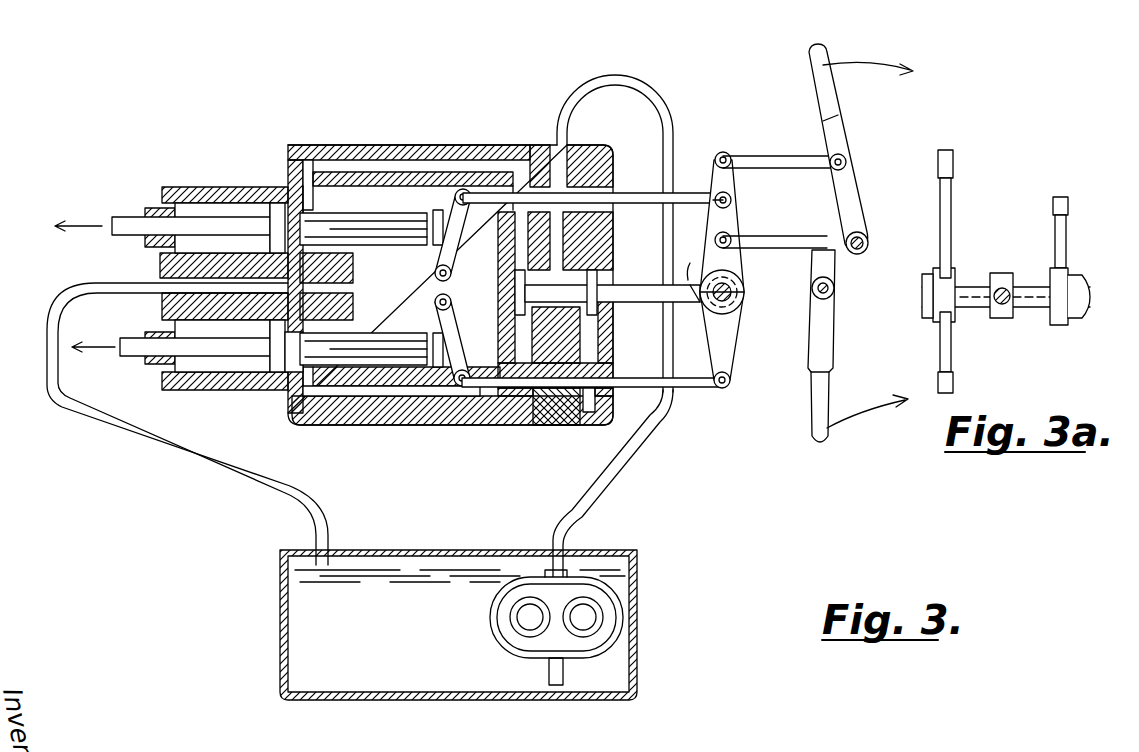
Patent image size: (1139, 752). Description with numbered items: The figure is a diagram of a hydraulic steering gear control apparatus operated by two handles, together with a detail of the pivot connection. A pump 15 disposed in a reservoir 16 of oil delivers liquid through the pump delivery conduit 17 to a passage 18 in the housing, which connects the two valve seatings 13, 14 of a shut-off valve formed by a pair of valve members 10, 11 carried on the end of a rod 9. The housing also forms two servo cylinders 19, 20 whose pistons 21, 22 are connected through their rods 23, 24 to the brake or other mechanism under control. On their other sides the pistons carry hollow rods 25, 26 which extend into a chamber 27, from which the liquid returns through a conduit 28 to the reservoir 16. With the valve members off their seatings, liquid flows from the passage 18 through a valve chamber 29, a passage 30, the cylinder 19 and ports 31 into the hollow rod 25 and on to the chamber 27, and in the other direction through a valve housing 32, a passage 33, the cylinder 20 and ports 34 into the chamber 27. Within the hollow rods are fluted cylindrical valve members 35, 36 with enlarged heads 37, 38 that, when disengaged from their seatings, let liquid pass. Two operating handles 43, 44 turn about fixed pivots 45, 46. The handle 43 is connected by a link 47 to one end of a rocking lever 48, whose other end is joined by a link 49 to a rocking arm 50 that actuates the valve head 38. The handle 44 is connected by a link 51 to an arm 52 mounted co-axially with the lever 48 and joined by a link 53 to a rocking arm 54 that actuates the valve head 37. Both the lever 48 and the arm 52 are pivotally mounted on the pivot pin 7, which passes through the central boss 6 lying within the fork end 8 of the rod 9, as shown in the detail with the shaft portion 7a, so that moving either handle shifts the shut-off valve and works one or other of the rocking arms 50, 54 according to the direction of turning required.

In FIG. 3, the central boss 6 is at (746, 302).
In FIG. 3A, the central boss 6 is at (936, 312).
In FIG. 3, the pivot pin 7 is at (740, 291).
In FIG. 3A, the pivot pin 7 is at (1087, 282).
In FIG. 3A, the shaft 7a is at (982, 308).
In FIG. 3, the fork end 8 is at (690, 278).
In FIG. 3A, the fork end 8 is at (1004, 320).
In FIG. 3, the rod 9 is at (672, 302).
In FIG. 3A, the rod 9 is at (1000, 287).
In FIG. 3, the valve member 10 is at (612, 280).
In FIG. 3, the valve member 11 is at (505, 396).
In FIG. 3, the valve seating 13 is at (576, 318).
In FIG. 3, the valve seating 14 is at (531, 405).
In FIG. 3, the pump 15 is at (495, 630).
In FIG. 3, the reservoir 16 is at (636, 634).
In FIG. 3, the pump delivery conduit 17 is at (605, 490).
In FIG. 3, the passage 18 is at (597, 296).
In FIG. 3, the servo cylinder 19 is at (212, 210).
In FIG. 3, the servo cylinder 20 is at (215, 372).
In FIG. 3, the piston 21 is at (276, 205).
In FIG. 3, the piston 22 is at (276, 373).
In FIG. 3, the piston rod 23 is at (127, 224).
In FIG. 3, the piston rod 24 is at (140, 357).
In FIG. 3, the hollow piston rod 25 is at (368, 210).
In FIG. 3, the hollow piston rod 26 is at (396, 398).
In FIG. 3, the chamber 27 is at (353, 398).
In FIG. 3, the conduit 28 is at (205, 478).
In FIG. 3, the valve chamber 29 is at (606, 268).
In FIG. 3, the passage 30 is at (490, 165).
In FIG. 3, the ports 31 is at (310, 195).
In FIG. 3, the valve housing 32 is at (515, 283).
In FIG. 3, the passage 33 is at (332, 402).
In FIG. 3, the ports 34 is at (291, 398).
In FIG. 3, the cylindrical valve member 35 is at (415, 215).
In FIG. 3, the cylindrical valve member 36 is at (376, 343).
In FIG. 3, the valve head 37 is at (440, 212).
In FIG. 3, the valve head 38 is at (440, 370).
In FIG. 3, the operating handle 43 is at (835, 140).
In FIG. 3, the operating handle 44 is at (830, 342).
In FIG. 3, the fixed pivot 45 is at (864, 238).
In FIG. 3, the fixed pivot 46 is at (829, 288).
In FIG. 3, the link 47 is at (760, 162).
In FIG. 3, the rocking lever 48 is at (735, 356).
In FIG. 3A, the rocking lever 48 is at (950, 216).
In FIG. 3, the link 49 is at (701, 388).
In FIG. 3, the rocking arm 50 is at (460, 305).
In FIG. 3, the link 51 is at (785, 240).
In FIG. 3, the arm 52 is at (735, 225).
In FIG. 3A, the arm 52 is at (1064, 226).
In FIG. 3, the link 53 is at (628, 197).
In FIG. 3, the rocking arm 54 is at (456, 232).